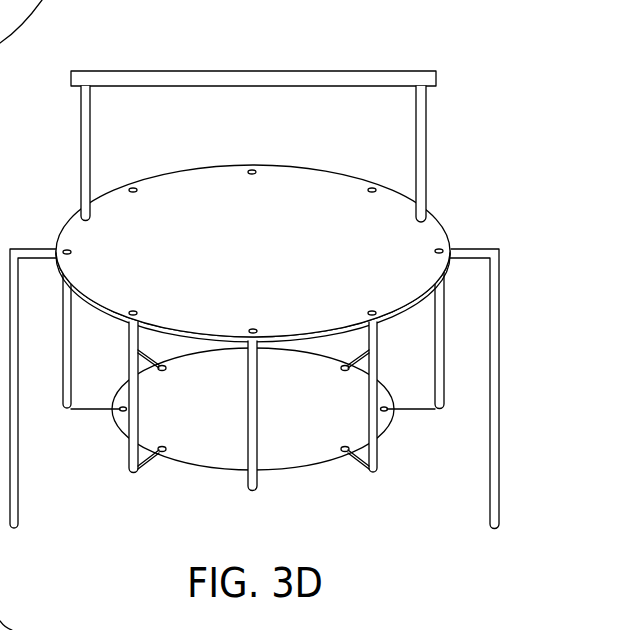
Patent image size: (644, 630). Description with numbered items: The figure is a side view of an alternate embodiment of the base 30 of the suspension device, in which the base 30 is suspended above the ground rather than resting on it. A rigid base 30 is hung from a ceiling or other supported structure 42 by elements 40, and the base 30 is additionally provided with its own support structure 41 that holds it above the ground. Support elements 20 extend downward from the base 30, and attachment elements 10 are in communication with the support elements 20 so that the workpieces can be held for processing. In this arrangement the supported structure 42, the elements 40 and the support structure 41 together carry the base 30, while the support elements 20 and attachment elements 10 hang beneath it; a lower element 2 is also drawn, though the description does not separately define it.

The lower shelf / tray 2 is at (210, 472).
The attachment element 10 is at (357, 452).
The support element 20 is at (375, 452).
The base 30 is at (446, 206).
The element 40 is at (85, 127).
The support structure 41 is at (18, 470).
The supported structure 42 is at (248, 78).